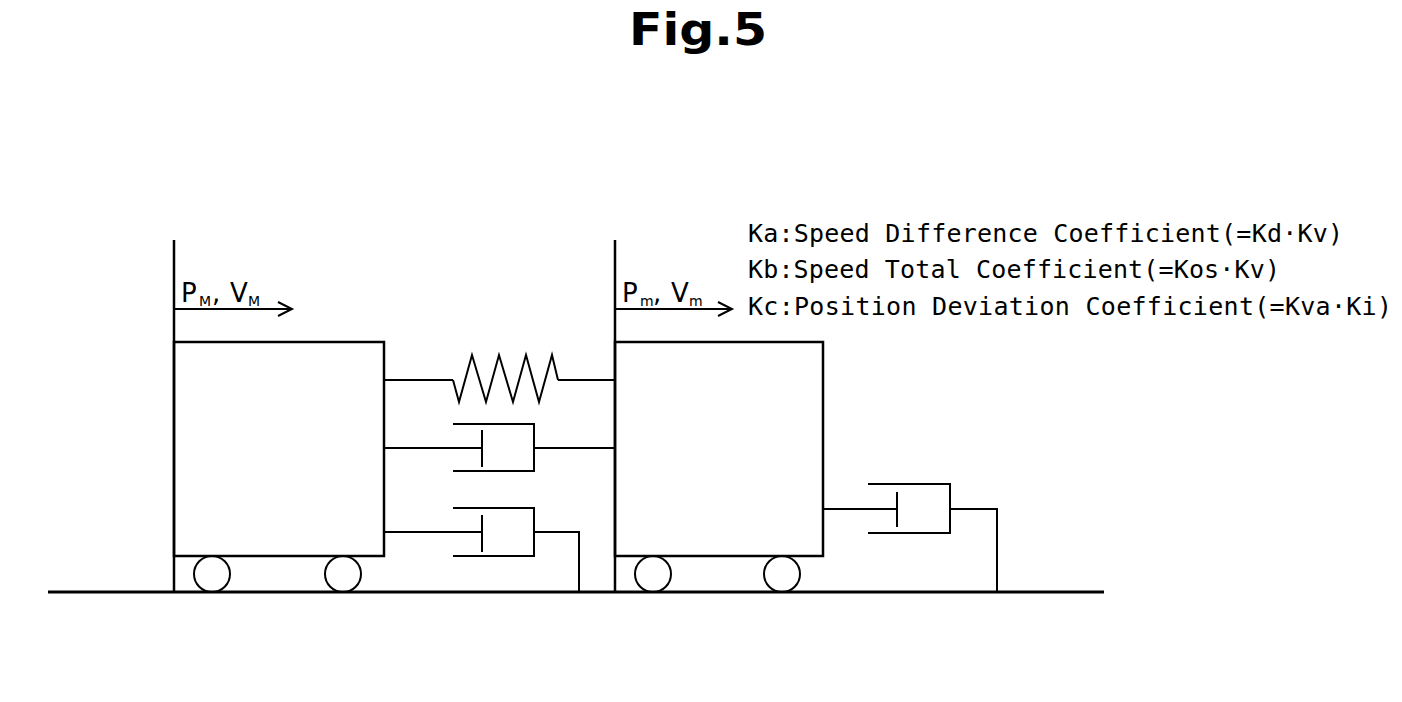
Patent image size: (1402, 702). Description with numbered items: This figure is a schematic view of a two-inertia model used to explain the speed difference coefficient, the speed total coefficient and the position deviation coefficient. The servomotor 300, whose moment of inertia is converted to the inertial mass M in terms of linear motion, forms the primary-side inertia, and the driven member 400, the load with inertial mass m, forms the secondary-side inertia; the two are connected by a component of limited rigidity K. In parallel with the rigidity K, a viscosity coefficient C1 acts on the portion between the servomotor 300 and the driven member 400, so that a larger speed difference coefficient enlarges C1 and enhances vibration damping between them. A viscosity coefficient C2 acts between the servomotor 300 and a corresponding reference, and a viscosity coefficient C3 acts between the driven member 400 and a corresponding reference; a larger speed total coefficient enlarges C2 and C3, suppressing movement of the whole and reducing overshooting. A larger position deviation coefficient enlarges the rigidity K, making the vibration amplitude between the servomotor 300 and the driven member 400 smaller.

The servomotor 300 is at (352, 340).
The driven member 400 is at (823, 377).
The rigidity K is at (499, 361).
The viscosity coefficient C1 is at (499, 444).
The viscosity coefficient C2 is at (481, 546).
The viscosity coefficient C3 is at (910, 534).